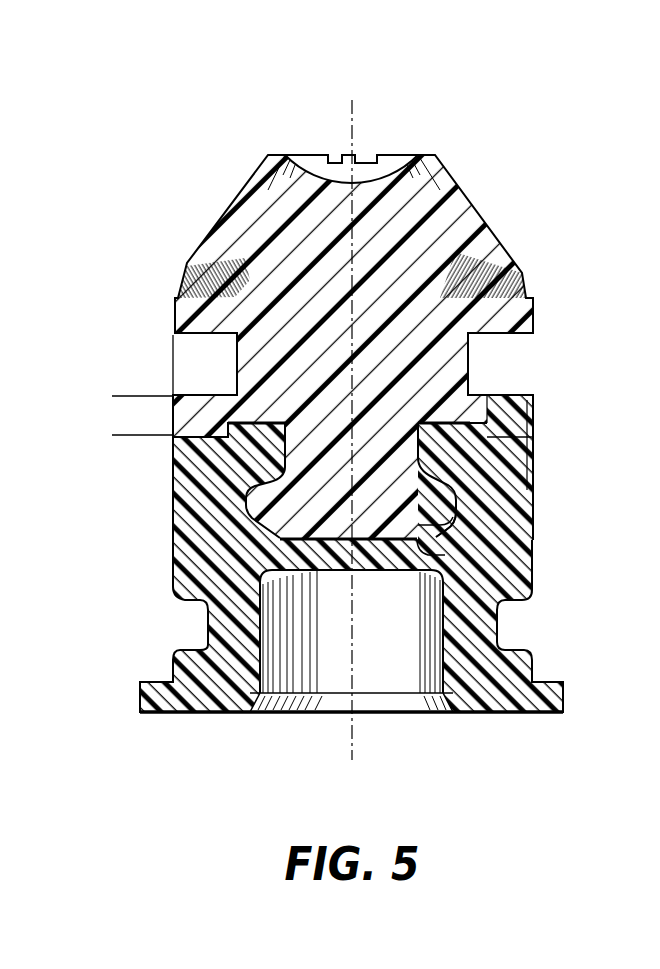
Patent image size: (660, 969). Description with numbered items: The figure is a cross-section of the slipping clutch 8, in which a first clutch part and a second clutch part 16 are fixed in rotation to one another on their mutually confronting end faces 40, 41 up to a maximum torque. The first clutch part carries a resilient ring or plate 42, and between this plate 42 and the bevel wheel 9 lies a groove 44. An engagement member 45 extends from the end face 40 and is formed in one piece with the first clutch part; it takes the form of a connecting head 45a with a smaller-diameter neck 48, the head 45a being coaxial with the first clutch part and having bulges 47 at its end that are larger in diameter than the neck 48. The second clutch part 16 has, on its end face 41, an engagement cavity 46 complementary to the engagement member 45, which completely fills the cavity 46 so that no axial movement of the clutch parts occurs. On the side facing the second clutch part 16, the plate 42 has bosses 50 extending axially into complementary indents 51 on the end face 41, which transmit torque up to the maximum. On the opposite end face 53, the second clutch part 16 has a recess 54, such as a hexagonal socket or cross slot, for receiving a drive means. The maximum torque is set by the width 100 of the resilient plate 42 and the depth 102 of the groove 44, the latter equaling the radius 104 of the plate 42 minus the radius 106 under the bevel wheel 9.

The slipping clutch 8 is at (352, 420).
The bevel wheel 9 is at (410, 213).
The second clutch part 16 is at (180, 585).
The end face of the first clutch part 40 is at (497, 400).
The end face of the second clutch part 41 is at (525, 465).
The resilient ring or plate 42 is at (197, 440).
The groove 44 is at (493, 350).
The engagement member 45 is at (455, 530).
The connecting head 45a is at (250, 533).
The engagement cavity 46 is at (440, 553).
The bulges 47 is at (460, 512).
The neck 48 is at (250, 490).
The bosses 50 is at (523, 403).
The indents 51 is at (523, 442).
The end face 53 is at (500, 713).
The recess 54 is at (333, 680).
The width of the resilient plate 100 is at (122, 367).
The depth of the groove 102 is at (148, 357).
The radius of the resilient plate 104 is at (173, 413).
The radius under bevel wheel 106 is at (352, 352).